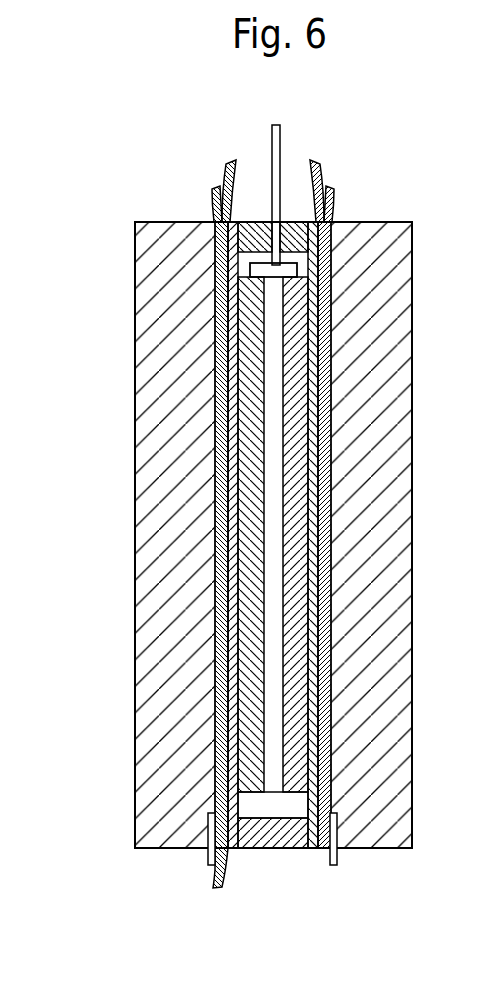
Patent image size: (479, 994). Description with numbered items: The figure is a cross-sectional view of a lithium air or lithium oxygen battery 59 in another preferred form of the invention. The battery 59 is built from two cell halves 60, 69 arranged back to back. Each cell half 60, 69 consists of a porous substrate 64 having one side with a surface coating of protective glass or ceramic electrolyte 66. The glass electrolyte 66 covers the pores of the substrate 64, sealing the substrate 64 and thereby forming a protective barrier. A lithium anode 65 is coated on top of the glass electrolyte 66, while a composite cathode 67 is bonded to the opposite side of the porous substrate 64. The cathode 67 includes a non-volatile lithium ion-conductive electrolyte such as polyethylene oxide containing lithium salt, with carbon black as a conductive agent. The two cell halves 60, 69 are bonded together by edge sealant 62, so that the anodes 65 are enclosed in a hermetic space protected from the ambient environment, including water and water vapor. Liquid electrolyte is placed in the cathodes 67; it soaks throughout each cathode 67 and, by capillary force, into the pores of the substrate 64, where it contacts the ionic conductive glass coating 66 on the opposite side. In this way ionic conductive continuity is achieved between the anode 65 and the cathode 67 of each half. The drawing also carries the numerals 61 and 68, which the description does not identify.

The lithium oxygen battery 59 is at (120, 196).
The cell half 60 is at (210, 122).
The center rod with head 61 is at (273, 155).
The edge sealant 62 is at (314, 207).
The porous substrate 64 is at (326, 418).
The anode 65 is at (300, 566).
The protective barrier solid electrolyte 66 is at (320, 710).
The oxygen cathode 67 is at (367, 780).
The bottom clips 68 is at (222, 889).
The cell half 69 is at (330, 108).